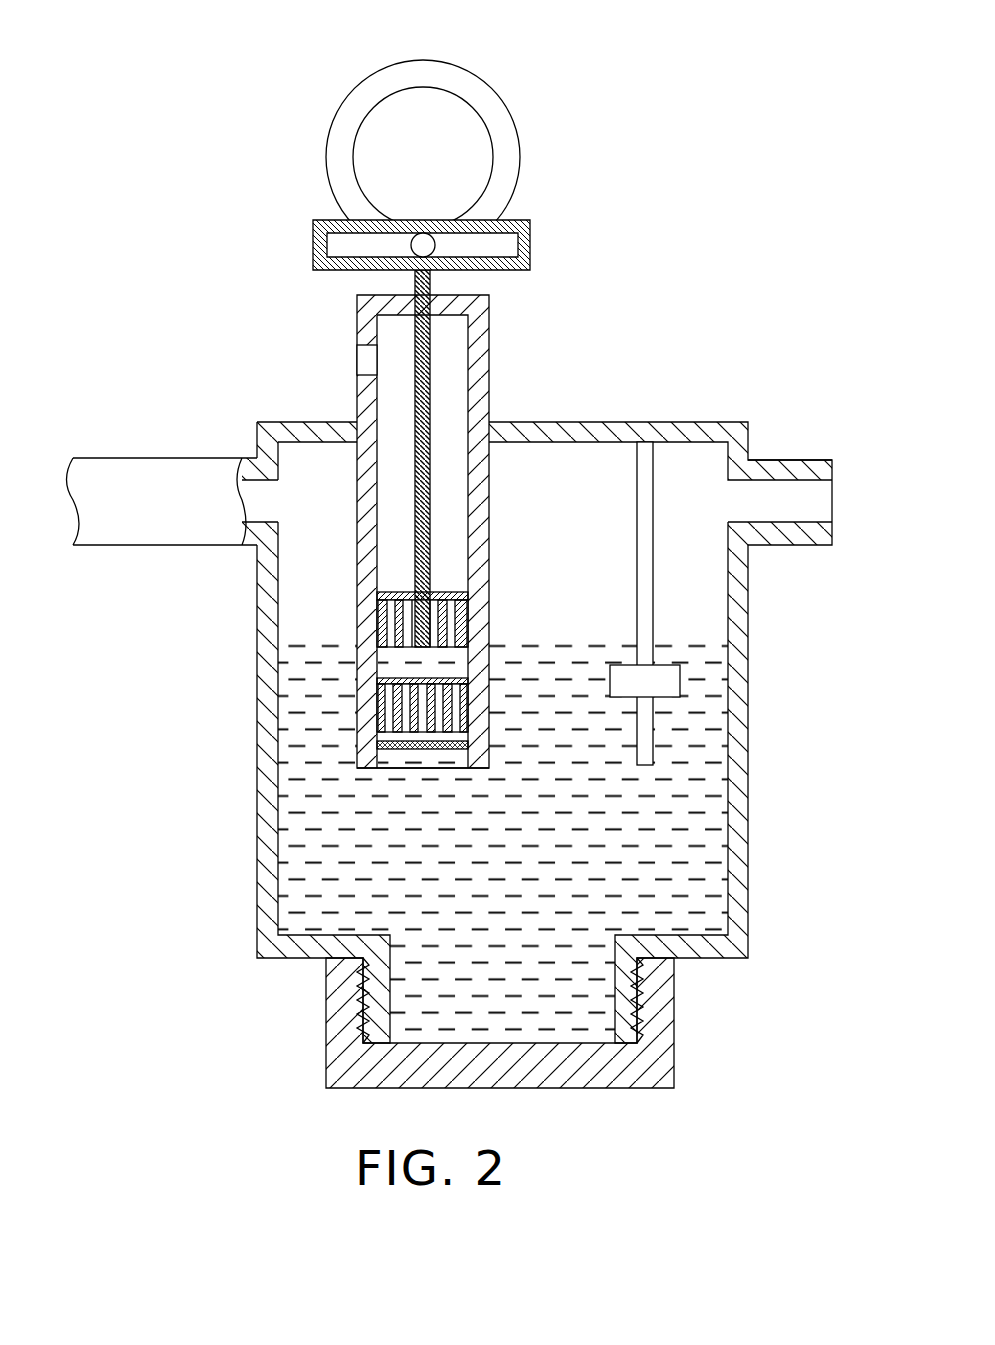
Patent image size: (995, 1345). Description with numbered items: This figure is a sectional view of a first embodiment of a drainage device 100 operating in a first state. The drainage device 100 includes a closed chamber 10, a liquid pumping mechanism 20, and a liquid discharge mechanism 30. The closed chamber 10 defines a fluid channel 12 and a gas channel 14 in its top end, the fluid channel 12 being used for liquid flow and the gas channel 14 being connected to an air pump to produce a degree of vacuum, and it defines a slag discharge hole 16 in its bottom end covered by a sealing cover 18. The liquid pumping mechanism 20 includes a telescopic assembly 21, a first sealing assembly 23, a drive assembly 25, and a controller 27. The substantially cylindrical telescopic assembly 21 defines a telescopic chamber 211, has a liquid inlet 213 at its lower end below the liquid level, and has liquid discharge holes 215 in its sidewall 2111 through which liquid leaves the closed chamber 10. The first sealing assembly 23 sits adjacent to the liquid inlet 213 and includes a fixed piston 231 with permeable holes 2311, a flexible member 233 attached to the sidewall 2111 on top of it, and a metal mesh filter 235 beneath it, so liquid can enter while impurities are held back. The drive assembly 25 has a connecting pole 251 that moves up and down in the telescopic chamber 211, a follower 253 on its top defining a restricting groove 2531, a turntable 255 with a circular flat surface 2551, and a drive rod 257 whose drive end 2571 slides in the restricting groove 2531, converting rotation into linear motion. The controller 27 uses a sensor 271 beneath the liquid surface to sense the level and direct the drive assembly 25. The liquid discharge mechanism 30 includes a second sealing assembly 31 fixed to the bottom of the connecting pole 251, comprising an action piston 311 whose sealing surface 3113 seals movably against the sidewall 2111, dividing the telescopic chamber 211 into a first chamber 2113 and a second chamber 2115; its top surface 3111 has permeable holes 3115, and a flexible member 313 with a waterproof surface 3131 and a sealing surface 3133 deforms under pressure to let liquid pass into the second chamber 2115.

The drainage device 100 is at (172, 47).
The closed chamber 10 is at (720, 430).
The fluid channel 12 is at (125, 472).
The gas channel 14 is at (790, 497).
The slag discharge hole 16 is at (523, 935).
The sealing cover 18 is at (605, 1063).
The liquid pumping mechanism 20 is at (464, 572).
The telescopic assembly 21 is at (362, 572).
The telescopic chamber 211 is at (453, 353).
The liquid inlet 213 is at (435, 766).
The liquid discharge holes 215 is at (365, 360).
The sidewall 2111 is at (400, 681).
The first chamber 2113 is at (410, 662).
The second chamber 2115 is at (397, 350).
The first sealing assembly 23 is at (464, 766).
The fixed piston 231 is at (440, 725).
The flexible member 233 is at (445, 688).
The filter 235 is at (420, 745).
The permeable holes 2311 is at (440, 707).
The drive assembly 25 is at (434, 350).
The connecting pole 251 is at (492, 253).
The follower 253 is at (407, 223).
The turntable 255 is at (414, 156).
The drive rod 257 is at (403, 186).
The restricting groove 2531 is at (343, 243).
The circular flat surface 2551 is at (395, 158).
The drive end 2571 is at (418, 238).
The controller 27 is at (719, 603).
The sensor 271 is at (662, 680).
The liquid discharge mechanism 30 is at (464, 591).
The second sealing assembly 31 is at (455, 500).
The action piston 311 is at (455, 628).
The flexible member 313 is at (393, 600).
The top surface 3111 is at (440, 589).
The sealing surface 3113 is at (468, 622).
The permeable holes 3115 is at (462, 628).
The waterproof surface 3131 is at (452, 589).
The sealing surface 3133 is at (455, 632).